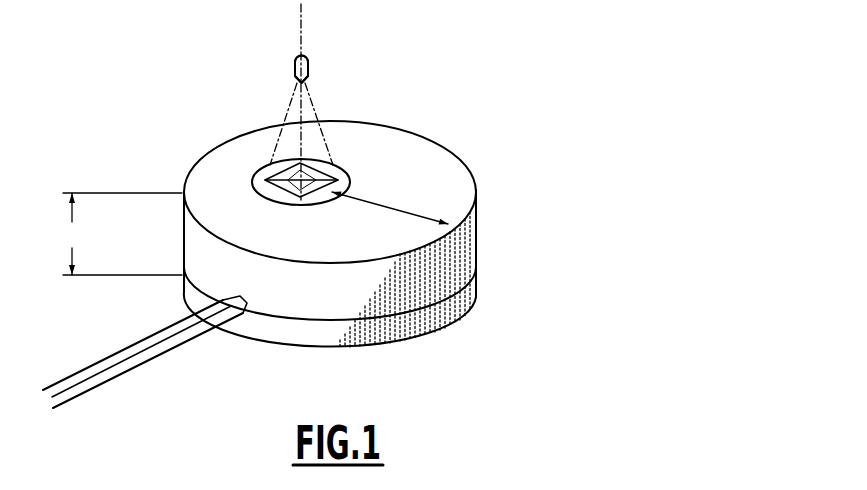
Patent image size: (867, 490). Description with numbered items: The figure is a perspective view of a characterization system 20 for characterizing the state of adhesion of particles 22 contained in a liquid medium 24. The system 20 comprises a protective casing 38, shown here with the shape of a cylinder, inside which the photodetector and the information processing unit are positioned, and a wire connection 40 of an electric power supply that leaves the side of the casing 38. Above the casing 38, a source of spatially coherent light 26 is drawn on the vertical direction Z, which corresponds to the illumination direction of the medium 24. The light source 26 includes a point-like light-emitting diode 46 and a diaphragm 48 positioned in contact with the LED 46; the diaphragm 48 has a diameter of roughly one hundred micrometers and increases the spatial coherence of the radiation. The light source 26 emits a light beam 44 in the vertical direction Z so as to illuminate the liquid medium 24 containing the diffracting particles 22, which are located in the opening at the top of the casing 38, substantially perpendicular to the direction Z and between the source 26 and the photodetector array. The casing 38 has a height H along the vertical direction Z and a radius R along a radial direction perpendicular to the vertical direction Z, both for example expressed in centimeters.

The characterization system 20 is at (359, 182).
The particles 22 is at (310, 187).
The liquid medium 24 is at (322, 172).
The light source 26 is at (320, 68).
The protective casing 38 is at (485, 205).
The wire connection 40 is at (88, 384).
The light beam 44 is at (318, 119).
The light-emitting diode 46 is at (294, 68).
The diaphragm 48 is at (311, 84).
The vertical direction Z is at (300, 44).
The height H is at (122, 234).
The radius R is at (377, 207).